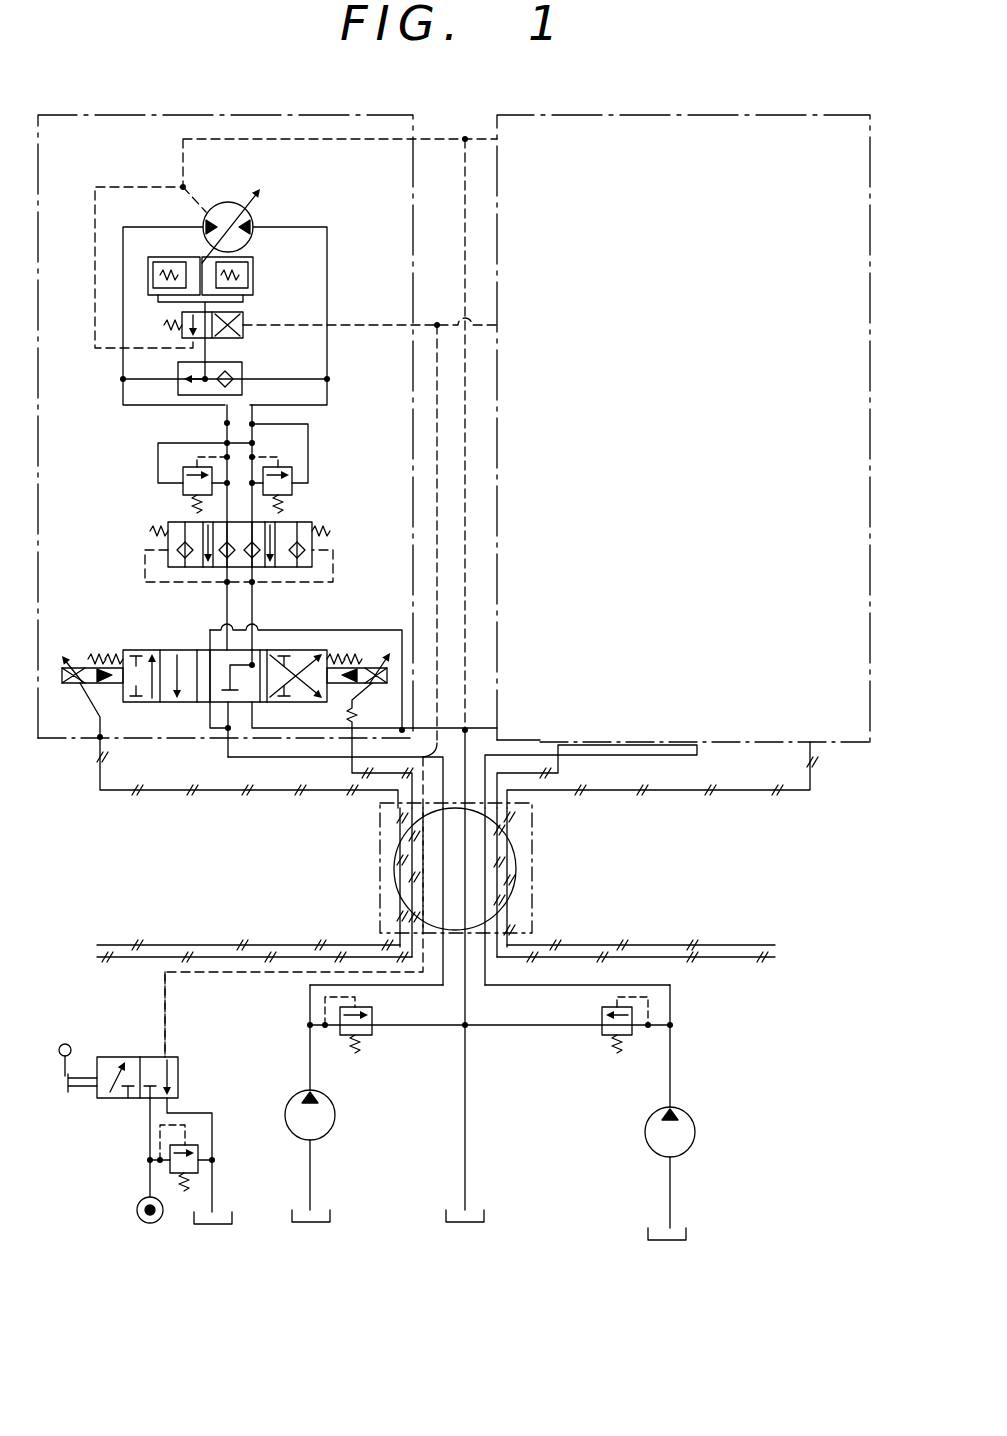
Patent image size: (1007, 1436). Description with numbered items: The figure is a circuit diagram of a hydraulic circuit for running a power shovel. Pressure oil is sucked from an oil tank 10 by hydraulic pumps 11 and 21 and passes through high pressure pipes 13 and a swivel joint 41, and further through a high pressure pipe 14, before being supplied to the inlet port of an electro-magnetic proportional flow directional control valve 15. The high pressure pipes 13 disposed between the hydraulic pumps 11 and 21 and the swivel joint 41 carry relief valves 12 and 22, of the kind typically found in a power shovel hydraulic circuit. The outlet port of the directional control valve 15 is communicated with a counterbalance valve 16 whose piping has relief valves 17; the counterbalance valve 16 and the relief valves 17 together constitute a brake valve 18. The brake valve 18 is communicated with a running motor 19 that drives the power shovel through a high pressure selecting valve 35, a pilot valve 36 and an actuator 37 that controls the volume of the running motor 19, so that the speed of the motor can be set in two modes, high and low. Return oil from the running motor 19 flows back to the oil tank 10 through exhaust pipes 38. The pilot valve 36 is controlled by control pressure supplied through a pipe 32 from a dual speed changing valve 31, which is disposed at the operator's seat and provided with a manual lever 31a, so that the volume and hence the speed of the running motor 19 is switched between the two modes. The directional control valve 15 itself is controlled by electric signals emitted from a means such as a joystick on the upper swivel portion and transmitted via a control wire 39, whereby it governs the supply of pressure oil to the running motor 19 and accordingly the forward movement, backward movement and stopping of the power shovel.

The oil tank 10 is at (317, 1222).
The hydraulic pump 11 is at (336, 1120).
The relief valve 12 is at (372, 1032).
The high pressure pipe 13 is at (306, 1060).
The high pressure pipe 14 is at (446, 757).
The electro-magnetic proportional flow directional control valve 15 is at (150, 650).
The counterbalance valve 16 is at (306, 522).
The relief valve 17 is at (217, 472).
The brake valve 18 is at (353, 427).
The running motor 19 is at (256, 212).
The hydraulic pump 21 is at (647, 1135).
The relief valve 22 is at (602, 1030).
The dual speed changing valve 31 is at (110, 1098).
The manual lever 31a is at (66, 1044).
The pipe 32 is at (165, 1010).
The high pressure selecting valve 35 is at (243, 368).
The pilot valve 36 is at (244, 320).
The actuator 37 is at (253, 270).
The exhaust pipe 38 is at (427, 140).
The control wire 39 is at (197, 945).
The swivel joint 41 is at (533, 868).